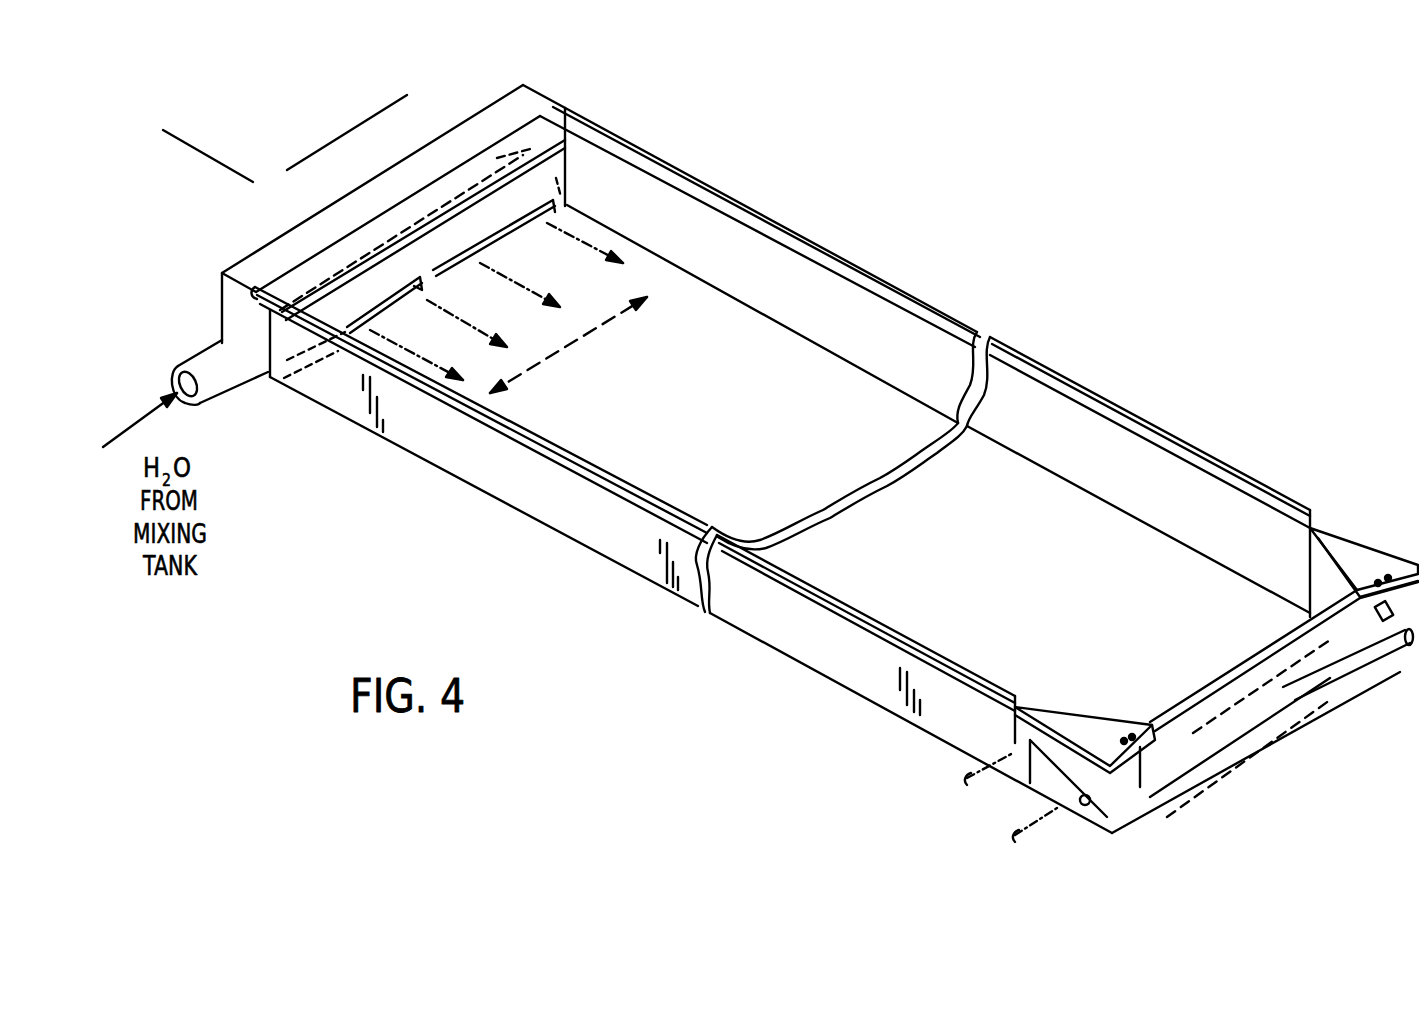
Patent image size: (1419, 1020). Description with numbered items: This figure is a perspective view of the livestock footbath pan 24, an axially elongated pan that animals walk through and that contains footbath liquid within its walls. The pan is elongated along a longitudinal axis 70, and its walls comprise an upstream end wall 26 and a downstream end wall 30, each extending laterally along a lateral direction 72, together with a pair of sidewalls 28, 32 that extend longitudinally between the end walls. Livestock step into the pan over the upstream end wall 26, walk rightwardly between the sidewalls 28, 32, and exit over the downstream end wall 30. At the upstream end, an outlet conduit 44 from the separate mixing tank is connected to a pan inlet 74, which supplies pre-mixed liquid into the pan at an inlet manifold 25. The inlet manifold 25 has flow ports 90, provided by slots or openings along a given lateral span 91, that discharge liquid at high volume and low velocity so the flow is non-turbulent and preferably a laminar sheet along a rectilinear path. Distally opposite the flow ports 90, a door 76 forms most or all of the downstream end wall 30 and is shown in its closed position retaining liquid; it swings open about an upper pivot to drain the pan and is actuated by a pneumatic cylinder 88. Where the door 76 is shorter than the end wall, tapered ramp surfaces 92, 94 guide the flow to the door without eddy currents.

The footbath pan 24 is at (454, 477).
The inlet manifold 25 is at (572, 162).
The upstream end wall 26 is at (567, 178).
The sidewall 28 is at (660, 180).
The downstream end wall 30 is at (1240, 660).
The sidewall 32 is at (763, 636).
The outlet conduit 44 is at (202, 347).
The longitudinal axis 70 is at (184, 138).
The lateral direction 72 is at (354, 128).
The pan inlet 74 is at (265, 350).
The door 76 is at (1283, 683).
The pneumatic cylinder 88 is at (1053, 768).
The flow ports 90 is at (420, 292).
The lateral span 91 is at (590, 333).
The tapered ramp surface 92 is at (1325, 570).
The tapered ramp surface 94 is at (1103, 713).